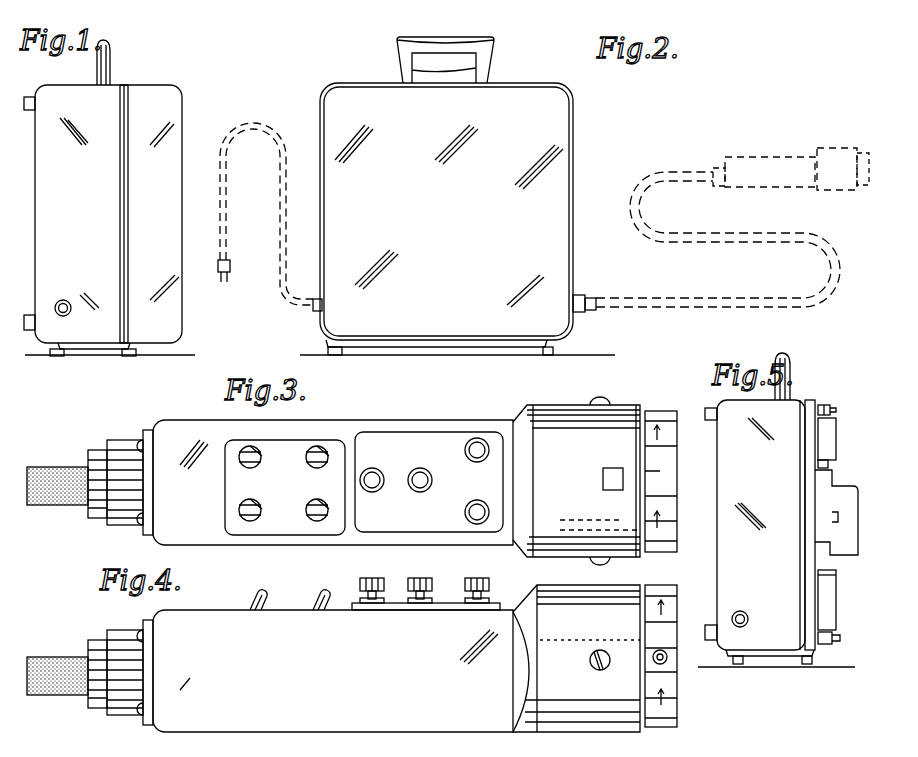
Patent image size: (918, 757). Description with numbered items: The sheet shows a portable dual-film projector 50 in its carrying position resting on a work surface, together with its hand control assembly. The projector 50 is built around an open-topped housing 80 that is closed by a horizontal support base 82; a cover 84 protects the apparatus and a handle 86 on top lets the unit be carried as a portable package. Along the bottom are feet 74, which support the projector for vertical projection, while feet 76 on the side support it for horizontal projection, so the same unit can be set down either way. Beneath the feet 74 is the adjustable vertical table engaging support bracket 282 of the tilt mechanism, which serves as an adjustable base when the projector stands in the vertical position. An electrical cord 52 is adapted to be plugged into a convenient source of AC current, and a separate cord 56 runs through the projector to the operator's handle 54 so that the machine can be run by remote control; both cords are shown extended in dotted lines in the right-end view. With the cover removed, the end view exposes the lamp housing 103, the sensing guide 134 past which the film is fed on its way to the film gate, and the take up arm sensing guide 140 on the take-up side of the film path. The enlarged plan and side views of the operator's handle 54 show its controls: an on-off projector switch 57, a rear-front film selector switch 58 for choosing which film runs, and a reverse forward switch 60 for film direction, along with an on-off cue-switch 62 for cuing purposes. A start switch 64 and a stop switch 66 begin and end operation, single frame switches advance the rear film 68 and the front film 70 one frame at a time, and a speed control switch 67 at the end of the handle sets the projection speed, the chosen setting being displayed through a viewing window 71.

In FIG. 1, the projector 50 is at (192, 74).
In FIG. 2, the projector 50 is at (585, 152).
In FIG. 5, the projector 50 is at (805, 386).
In FIG. 1, the electrical cord 52 is at (70, 298).
In FIG. 2, the electrical cord 52 is at (293, 313).
In FIG. 5, the electrical cord 52 is at (746, 610).
In FIG. 2, the operator's handle 54 is at (750, 158).
In FIG. 3, the operator's handle 54 is at (160, 432).
In FIG. 4, the operator's handle 54 is at (365, 722).
In FIG. 2, the cord 56 is at (640, 300).
In FIG. 3, the cord 56 is at (50, 467).
In FIG. 4, the cord 56 is at (50, 656).
In FIG. 3, the on-off projector switch 57 is at (242, 446).
In FIG. 3, the rear-front film selector switch 58 is at (246, 522).
In FIG. 4, the rear-front film selector switch 58 is at (252, 594).
In FIG. 3, the reverse forward switch 60 is at (322, 522).
In FIG. 4, the reverse forward switch 60 is at (320, 590).
In FIG. 3, the on-off cue-switch 62 is at (315, 445).
In FIG. 3, the start switch 64 is at (372, 468).
In FIG. 4, the start switch 64 is at (371, 576).
In FIG. 3, the stop switch 66 is at (420, 468).
In FIG. 4, the stop switch 66 is at (420, 576).
In FIG. 2, the speed control switch 67 is at (862, 148).
In FIG. 3, the speed control switch 67 is at (652, 410).
In FIG. 4, the speed control switch 67 is at (677, 703).
In FIG. 3, the single frame switch for the rear film 68 is at (477, 525).
In FIG. 4, the single frame switch for the rear film 68 is at (490, 584).
In FIG. 3, the single frame switch for the front film 70 is at (477, 438).
In FIG. 3, the viewing window 71 is at (603, 476).
In FIG. 1, the feet 74 is at (58, 358).
In FIG. 2, the feet 74 is at (328, 353).
In FIG. 5, the feet 74 is at (738, 666).
In FIG. 1, the feet 76 is at (35, 315).
In FIG. 5, the feet 76 is at (710, 408).
In FIG. 1, the housing 80 is at (115, 237).
In FIG. 5, the housing 80 is at (720, 562).
In FIG. 5, the horizontal support base 82 is at (822, 438).
In FIG. 1, the cover 84 is at (172, 122).
In FIG. 2, the cover 84 is at (548, 128).
In FIG. 5, the cover 84 is at (770, 747).
In FIG. 1, the handle 86 is at (112, 45).
In FIG. 2, the handle 86 is at (445, 42).
In FIG. 5, the handle 86 is at (788, 358).
In FIG. 5, the lamp housing 103 is at (848, 490).
In FIG. 5, the sensing guide 134 is at (830, 406).
In FIG. 5, the take up arm sensing guide 140 is at (832, 642).
In FIG. 1, the vertical table engaging support bracket 282 is at (72, 350).
In FIG. 2, the vertical table engaging support bracket 282 is at (340, 343).
In FIG. 5, the vertical table engaging support bracket 282 is at (790, 660).